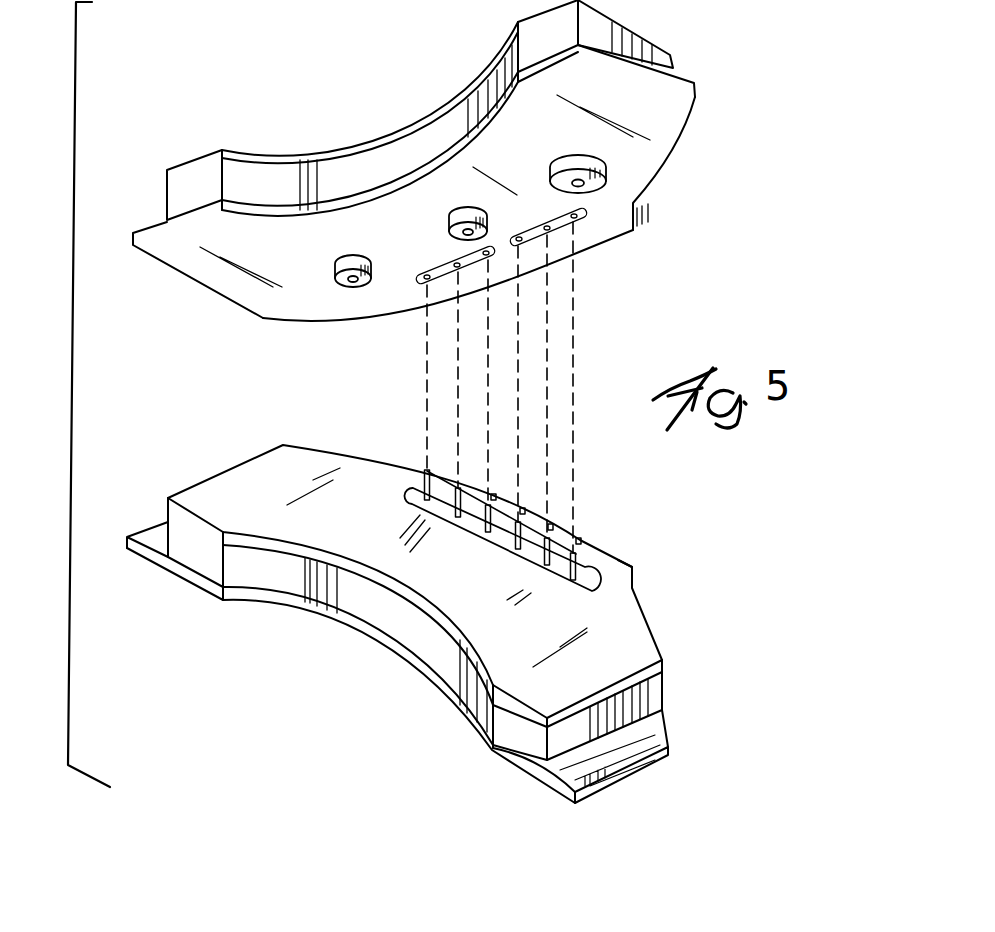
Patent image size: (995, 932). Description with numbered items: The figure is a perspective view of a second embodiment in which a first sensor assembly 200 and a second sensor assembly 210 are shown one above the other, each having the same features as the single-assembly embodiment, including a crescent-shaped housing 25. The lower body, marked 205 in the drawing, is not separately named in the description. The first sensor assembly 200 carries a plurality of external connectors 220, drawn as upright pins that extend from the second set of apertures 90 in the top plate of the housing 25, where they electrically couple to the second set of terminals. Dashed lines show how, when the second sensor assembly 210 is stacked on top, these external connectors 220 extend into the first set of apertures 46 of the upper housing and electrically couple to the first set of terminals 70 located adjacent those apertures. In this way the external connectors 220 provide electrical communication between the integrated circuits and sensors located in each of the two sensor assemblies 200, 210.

The first sensor assembly 200 is at (73, 360).
The second sensor assembly 210 is at (752, 83).
The lower housing body 205 is at (726, 697).
The housing 25 is at (512, 762).
The first set of apertures 46 is at (420, 281).
The first set of terminals 70 is at (484, 252).
The second set of apertures 90 is at (588, 594).
The plurality of external connectors 220 is at (570, 582).